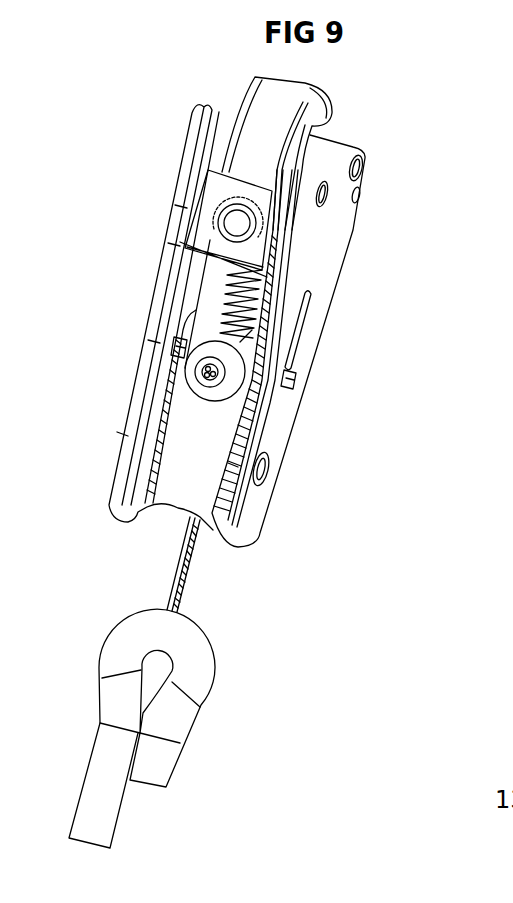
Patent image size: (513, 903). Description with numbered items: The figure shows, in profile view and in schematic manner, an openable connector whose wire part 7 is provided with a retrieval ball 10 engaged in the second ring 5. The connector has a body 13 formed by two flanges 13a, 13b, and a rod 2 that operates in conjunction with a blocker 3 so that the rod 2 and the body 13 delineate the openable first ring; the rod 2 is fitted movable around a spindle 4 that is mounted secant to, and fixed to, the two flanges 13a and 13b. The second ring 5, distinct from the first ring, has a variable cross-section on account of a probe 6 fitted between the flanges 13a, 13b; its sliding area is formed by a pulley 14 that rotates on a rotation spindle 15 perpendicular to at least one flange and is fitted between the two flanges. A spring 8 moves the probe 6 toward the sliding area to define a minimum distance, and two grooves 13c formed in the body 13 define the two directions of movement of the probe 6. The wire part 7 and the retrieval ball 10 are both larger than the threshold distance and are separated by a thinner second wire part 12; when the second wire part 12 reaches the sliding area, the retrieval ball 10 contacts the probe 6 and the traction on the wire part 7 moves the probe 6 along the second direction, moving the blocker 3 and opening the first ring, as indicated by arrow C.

The rod 2 is at (262, 113).
The blocker 3 is at (236, 223).
The spindle 4 is at (355, 172).
The second ring 5 is at (129, 317).
The probe 6 is at (293, 382).
The wire part 7 is at (183, 643).
The spring 8 is at (237, 298).
The retrieval ball 10 is at (200, 375).
The second wire part 12 is at (190, 572).
The body 13 is at (97, 190).
The flange 13a is at (172, 222).
The flange 13b is at (330, 240).
The grooves 13c is at (310, 297).
The pulley 14 is at (177, 450).
The rotation spindle 15 is at (262, 475).
The direction C is at (358, 118).